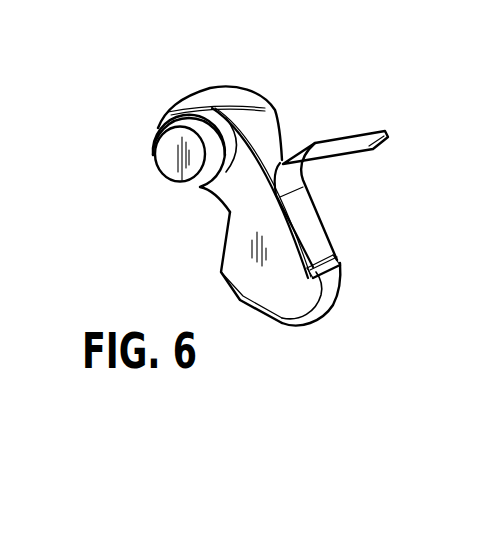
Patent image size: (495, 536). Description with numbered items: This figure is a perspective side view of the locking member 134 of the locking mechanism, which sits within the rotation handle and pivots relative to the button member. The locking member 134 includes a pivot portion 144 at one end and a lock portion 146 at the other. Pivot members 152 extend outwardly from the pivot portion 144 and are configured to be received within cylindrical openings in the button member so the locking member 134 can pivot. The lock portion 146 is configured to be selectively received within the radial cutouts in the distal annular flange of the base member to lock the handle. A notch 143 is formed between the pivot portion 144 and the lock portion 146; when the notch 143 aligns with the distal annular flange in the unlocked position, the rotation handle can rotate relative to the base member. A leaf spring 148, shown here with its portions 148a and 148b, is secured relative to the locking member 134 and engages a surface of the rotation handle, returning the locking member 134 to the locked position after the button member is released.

The locking member 134 is at (308, 83).
The notch 143 is at (240, 209).
The pivot portion 144 is at (220, 99).
The lock portion 146 is at (288, 297).
The leaf spring 148 is at (327, 213).
The lower lip of tab 148a is at (340, 259).
The upper strip of tab 148b is at (352, 138).
The pivot members 152 is at (185, 120).